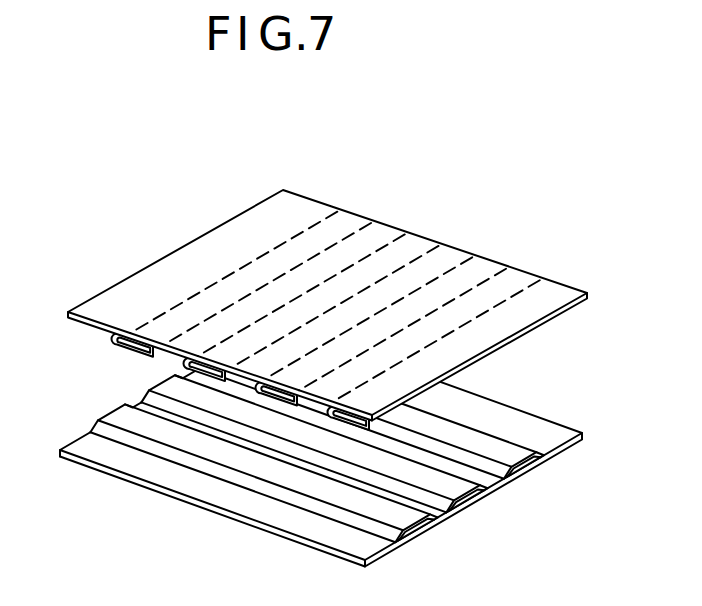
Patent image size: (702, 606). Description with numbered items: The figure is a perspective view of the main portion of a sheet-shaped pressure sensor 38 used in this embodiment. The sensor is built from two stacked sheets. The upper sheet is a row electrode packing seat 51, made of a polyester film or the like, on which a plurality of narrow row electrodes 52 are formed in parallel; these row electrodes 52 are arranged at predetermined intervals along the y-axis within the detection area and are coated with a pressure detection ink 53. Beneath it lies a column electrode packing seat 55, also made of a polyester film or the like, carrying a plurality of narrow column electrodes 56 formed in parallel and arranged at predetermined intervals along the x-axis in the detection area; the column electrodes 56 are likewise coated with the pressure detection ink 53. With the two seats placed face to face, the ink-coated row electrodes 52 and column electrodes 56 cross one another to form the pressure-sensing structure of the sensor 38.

The sheet-shaped pressure sensor 38 is at (513, 248).
The row electrode packing seat 51 is at (303, 213).
The row electrode 52 is at (143, 340).
The pressure detection ink 53 is at (128, 355).
The column electrode packing seat 55 is at (258, 532).
The column electrode 56 is at (475, 493).